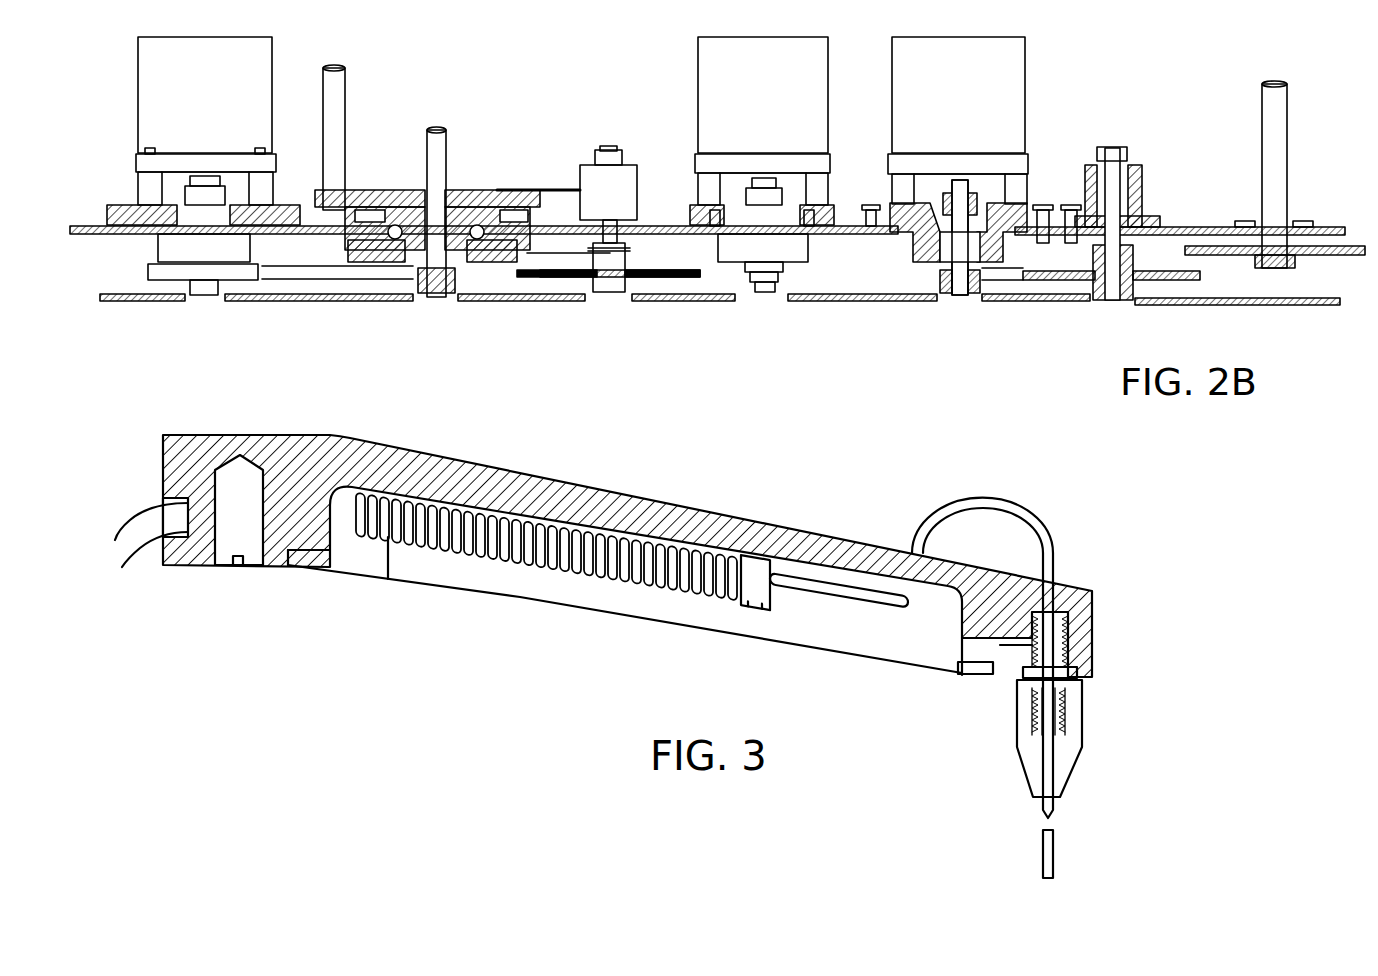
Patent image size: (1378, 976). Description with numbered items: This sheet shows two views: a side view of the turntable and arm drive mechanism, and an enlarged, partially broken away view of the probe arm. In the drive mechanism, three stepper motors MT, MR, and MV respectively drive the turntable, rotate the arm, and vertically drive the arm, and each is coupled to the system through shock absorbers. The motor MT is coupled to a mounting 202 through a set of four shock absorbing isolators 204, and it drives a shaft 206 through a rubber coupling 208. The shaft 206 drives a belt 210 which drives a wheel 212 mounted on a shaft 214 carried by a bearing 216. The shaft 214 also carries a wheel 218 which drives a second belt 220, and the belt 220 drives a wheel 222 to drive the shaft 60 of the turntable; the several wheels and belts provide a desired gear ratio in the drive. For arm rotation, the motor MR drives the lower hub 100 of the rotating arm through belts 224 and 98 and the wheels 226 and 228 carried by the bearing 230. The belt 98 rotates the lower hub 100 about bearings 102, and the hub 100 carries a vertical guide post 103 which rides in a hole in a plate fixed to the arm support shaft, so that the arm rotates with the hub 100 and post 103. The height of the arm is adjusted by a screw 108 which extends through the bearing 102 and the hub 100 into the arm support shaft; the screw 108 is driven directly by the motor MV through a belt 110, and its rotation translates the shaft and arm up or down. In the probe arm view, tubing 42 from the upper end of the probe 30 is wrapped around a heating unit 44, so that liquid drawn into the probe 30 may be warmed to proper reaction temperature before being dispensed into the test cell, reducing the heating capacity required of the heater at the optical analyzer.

In FIG. 2B, the stepper motor MV is at (272, 72).
In FIG. 2B, the stepper motor MR is at (698, 66).
In FIG. 2B, the stepper motor MT is at (1026, 72).
In FIG. 2B, the vertical guide post 103 is at (346, 96).
In FIG. 2B, the screw 108 is at (446, 135).
In FIG. 2B, the bearings 102 is at (480, 200).
In FIG. 2B, the lower hub 100 is at (487, 258).
In FIG. 2B, the belt 110 is at (330, 280).
In FIG. 2B, the belt 98 is at (563, 255).
In FIG. 2B, the bearing 230 is at (637, 170).
In FIG. 2B, the wheel 228 is at (627, 250).
In FIG. 2B, the wheel 226 is at (655, 282).
In FIG. 2B, the belt 224 is at (714, 282).
In FIG. 2B, the shock absorbing isolators 204 is at (885, 185).
In FIG. 2B, the mounting 202 is at (912, 250).
In FIG. 2B, the rubber coupling 208 is at (978, 205).
In FIG. 2B, the shaft 206 is at (960, 302).
In FIG. 2B, the belt 210 is at (1005, 282).
In FIG. 2B, the wheel 212 is at (1070, 282).
In FIG. 2B, the shaft 214 is at (1114, 196).
In FIG. 2B, the bearing 216 is at (1143, 196).
In FIG. 2B, the wheel 218 is at (1150, 282).
In FIG. 2B, the second belt 220 is at (1190, 280).
In FIG. 2B, the wheel 222 is at (1312, 258).
In FIG. 2B, the shaft of the turntable 60 is at (1265, 270).
In FIG. 3, the probe 30 is at (1067, 593).
In FIG. 3, the tubing 42 is at (856, 604).
In FIG. 3, the heating unit 44 is at (753, 607).